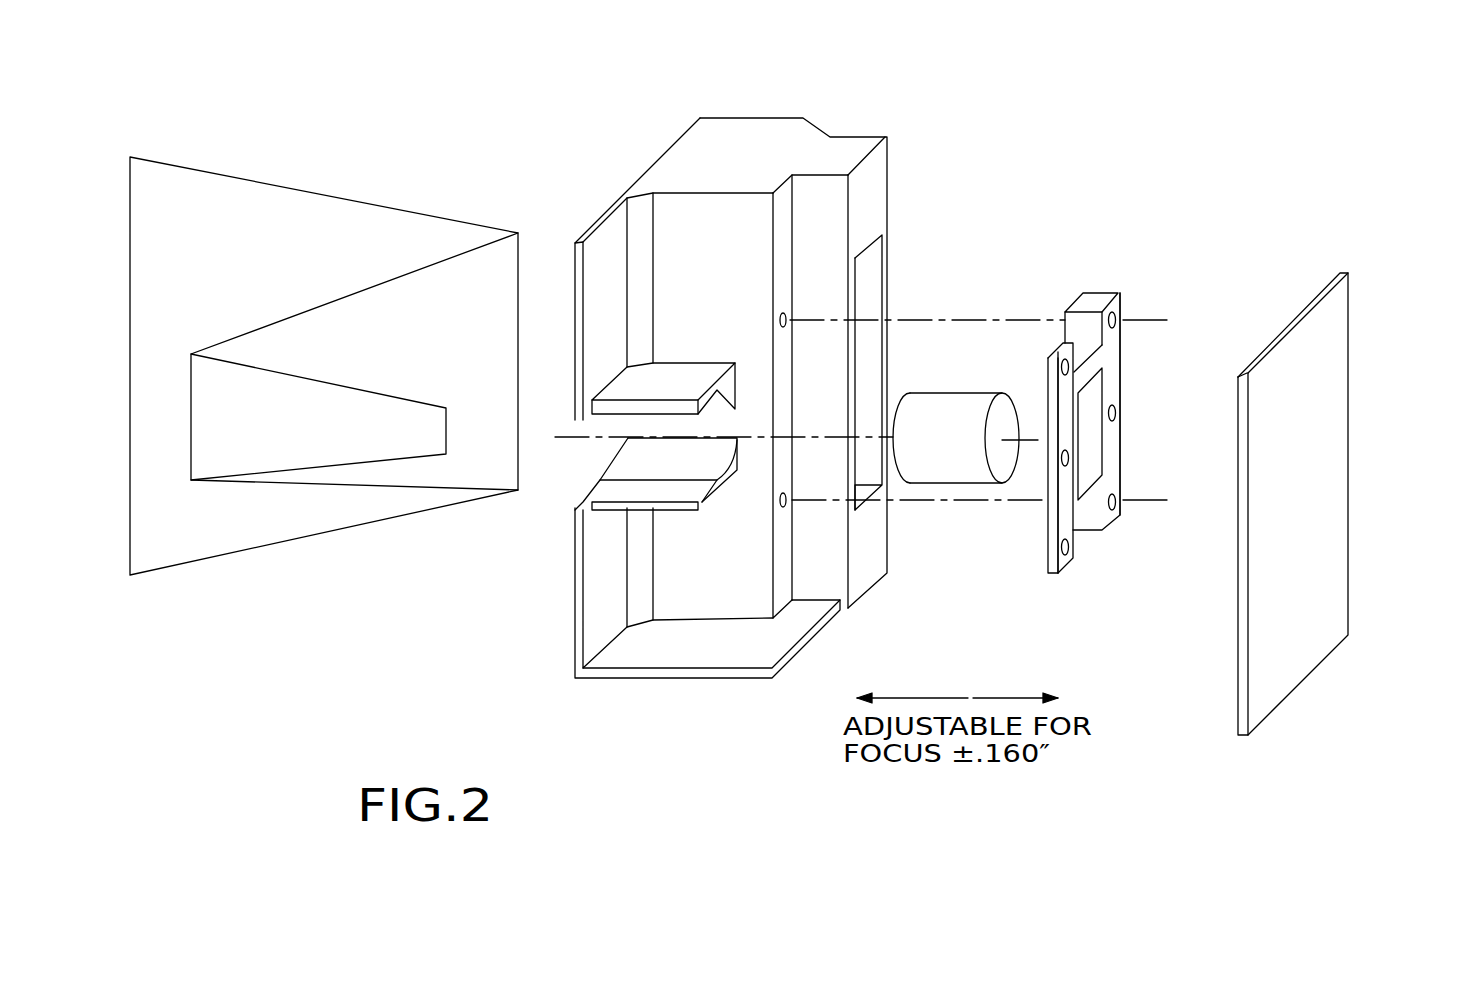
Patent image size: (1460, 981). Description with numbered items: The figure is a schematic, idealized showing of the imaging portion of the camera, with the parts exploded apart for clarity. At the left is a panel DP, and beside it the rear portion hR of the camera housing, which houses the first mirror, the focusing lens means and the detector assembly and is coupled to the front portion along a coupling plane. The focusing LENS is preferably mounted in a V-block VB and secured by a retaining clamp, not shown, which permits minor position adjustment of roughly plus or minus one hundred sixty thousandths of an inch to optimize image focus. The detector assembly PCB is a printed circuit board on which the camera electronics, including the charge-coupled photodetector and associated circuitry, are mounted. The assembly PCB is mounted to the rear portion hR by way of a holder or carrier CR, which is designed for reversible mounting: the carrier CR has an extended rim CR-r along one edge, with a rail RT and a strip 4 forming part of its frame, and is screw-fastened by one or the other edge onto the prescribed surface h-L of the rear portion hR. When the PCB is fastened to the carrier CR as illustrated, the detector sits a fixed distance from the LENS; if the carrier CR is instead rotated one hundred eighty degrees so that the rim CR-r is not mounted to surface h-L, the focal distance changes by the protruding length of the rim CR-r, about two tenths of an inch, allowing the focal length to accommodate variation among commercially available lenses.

The display panel DP is at (317, 192).
The rear portion hR is at (803, 118).
The prescribed surface h-L is at (778, 220).
The V-block VB is at (606, 505).
The focusing lens means LENS is at (948, 482).
The carrier CR is at (1206, 391).
The extended rim CR-r is at (1083, 292).
The carrier rail RT is at (1122, 387).
The carrier mounting strip 4 is at (1046, 529).
The detector assembly PCB is at (1348, 340).